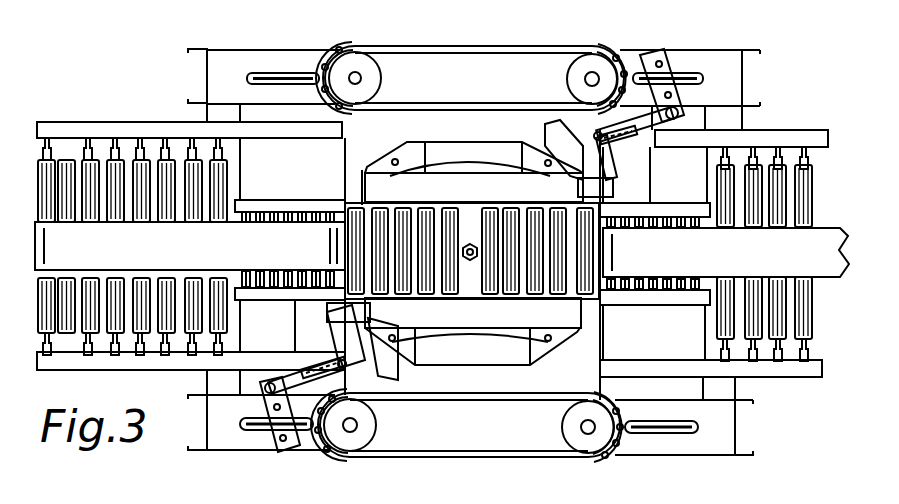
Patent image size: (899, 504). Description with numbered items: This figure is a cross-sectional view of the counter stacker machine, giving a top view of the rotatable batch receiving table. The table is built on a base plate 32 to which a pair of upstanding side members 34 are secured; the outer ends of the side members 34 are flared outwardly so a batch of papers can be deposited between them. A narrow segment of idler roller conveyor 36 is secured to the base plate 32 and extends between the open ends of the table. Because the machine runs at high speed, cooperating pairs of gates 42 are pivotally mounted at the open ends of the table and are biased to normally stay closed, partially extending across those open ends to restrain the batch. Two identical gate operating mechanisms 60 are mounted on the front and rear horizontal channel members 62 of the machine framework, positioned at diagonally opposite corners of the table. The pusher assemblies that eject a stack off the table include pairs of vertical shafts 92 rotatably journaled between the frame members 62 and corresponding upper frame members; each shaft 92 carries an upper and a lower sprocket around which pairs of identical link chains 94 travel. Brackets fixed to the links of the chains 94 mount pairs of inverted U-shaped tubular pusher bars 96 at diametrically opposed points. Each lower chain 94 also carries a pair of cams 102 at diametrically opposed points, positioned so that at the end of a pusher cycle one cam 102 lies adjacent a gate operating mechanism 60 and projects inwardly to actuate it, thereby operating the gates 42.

The base plate 32 is at (410, 172).
The upstanding side members 34 is at (452, 172).
The idler roller conveyor 36 is at (464, 222).
The gates 42 is at (362, 178).
The gate operating mechanisms 60 is at (624, 153).
The horizontal channel members 62 is at (722, 62).
The vertical shafts 92 is at (362, 78).
The link chains 94 is at (460, 49).
The pusher bars 96 is at (247, 78).
The cams 102 is at (340, 45).